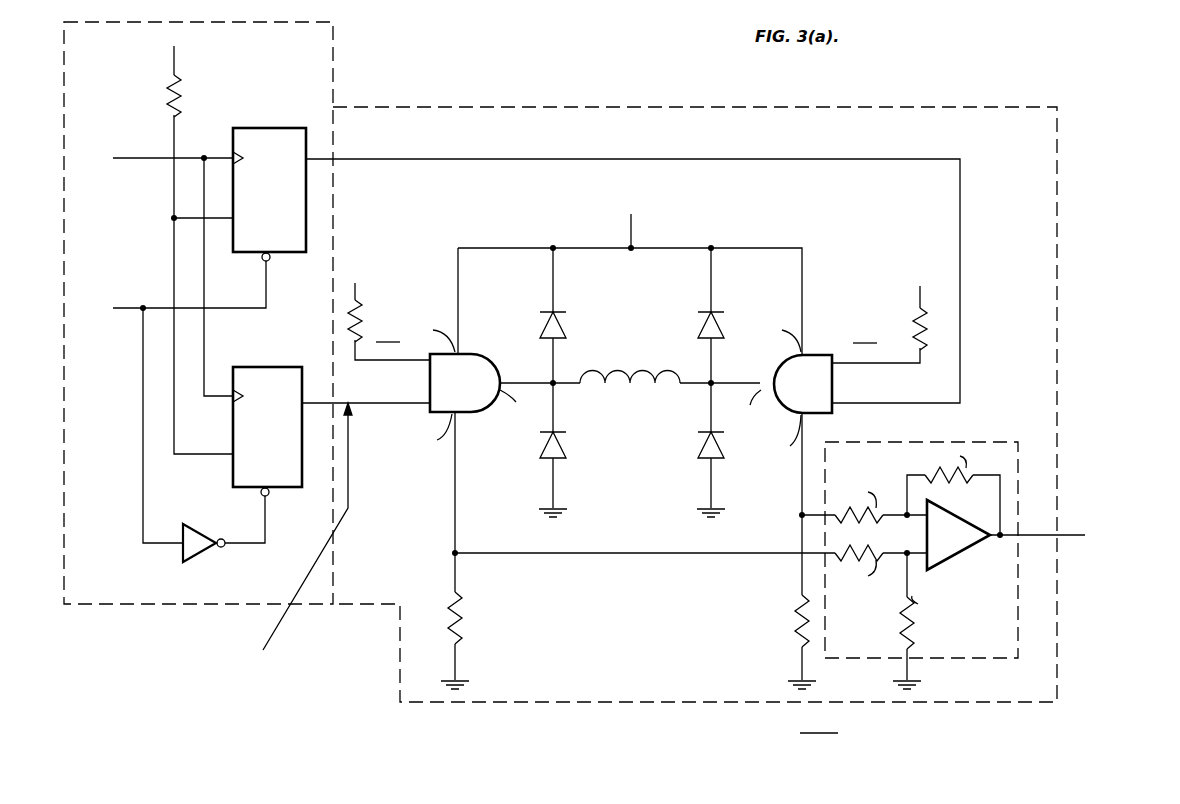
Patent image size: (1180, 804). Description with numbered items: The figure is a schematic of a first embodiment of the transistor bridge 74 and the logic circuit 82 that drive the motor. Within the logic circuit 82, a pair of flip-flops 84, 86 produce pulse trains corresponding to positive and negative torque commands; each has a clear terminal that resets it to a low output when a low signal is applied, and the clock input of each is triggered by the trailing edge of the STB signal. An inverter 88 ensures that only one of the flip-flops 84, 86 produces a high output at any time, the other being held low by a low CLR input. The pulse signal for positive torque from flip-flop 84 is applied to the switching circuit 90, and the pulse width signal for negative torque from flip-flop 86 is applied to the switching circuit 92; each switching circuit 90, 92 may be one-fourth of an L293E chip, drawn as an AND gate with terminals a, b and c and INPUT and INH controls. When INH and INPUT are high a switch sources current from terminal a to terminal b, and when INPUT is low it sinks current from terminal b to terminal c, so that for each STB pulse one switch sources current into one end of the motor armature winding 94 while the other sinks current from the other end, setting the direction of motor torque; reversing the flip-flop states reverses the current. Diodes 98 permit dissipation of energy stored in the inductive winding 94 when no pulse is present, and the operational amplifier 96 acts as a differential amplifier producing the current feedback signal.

The transistor bridge 74 is at (667, 85).
The logic circuit 82 is at (382, 45).
The flip-flop 84 is at (270, 128).
The flip-flop 86 is at (267, 431).
The inverter 88 is at (198, 532).
The switching circuit 90 is at (823, 353).
The switching circuit 92 is at (430, 410).
The motor armature winding 94 is at (643, 374).
The operational amplifier 96 is at (995, 427).
The diodes 98 is at (565, 326).